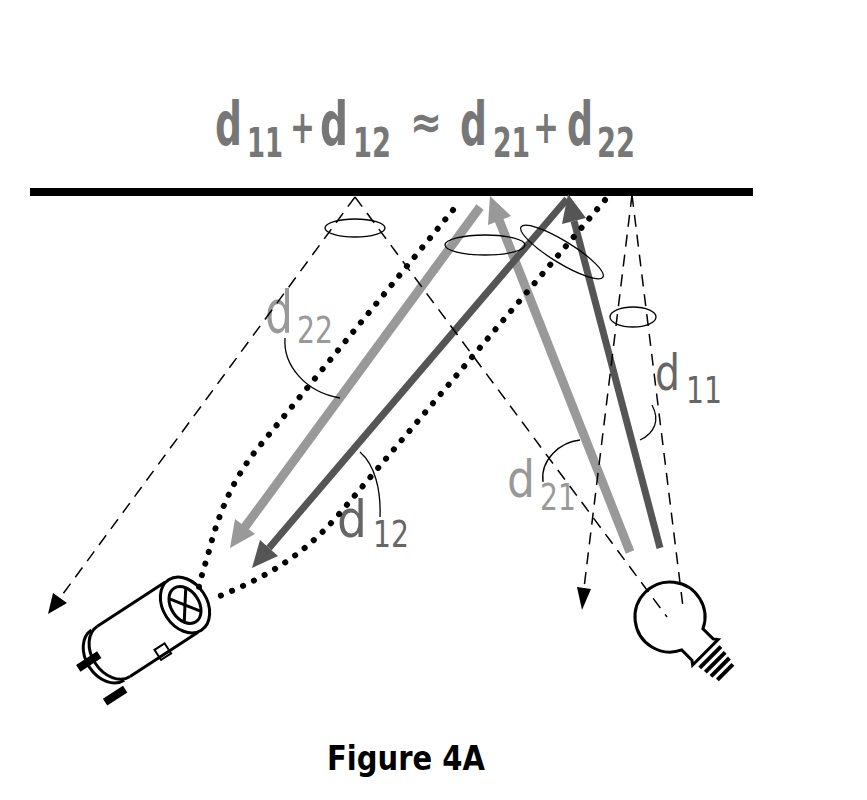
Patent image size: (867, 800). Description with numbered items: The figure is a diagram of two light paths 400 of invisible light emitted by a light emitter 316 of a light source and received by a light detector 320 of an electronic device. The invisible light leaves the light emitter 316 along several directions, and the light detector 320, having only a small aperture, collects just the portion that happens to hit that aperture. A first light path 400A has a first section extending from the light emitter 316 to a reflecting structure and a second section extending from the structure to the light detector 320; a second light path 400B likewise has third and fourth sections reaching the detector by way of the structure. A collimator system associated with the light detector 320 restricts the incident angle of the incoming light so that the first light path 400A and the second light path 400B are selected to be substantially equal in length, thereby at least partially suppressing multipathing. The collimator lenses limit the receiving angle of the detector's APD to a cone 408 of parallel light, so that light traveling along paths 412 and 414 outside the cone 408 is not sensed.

The light paths 400 is at (697, 85).
The first light path 400A is at (600, 276).
The second light path 400B is at (485, 236).
The light path outside the cone 412 is at (656, 317).
The light path outside the cone 414 is at (328, 228).
The light emitter 316 is at (700, 600).
The light detector 320 is at (215, 615).
The cone of parallel light 408 is at (277, 578).